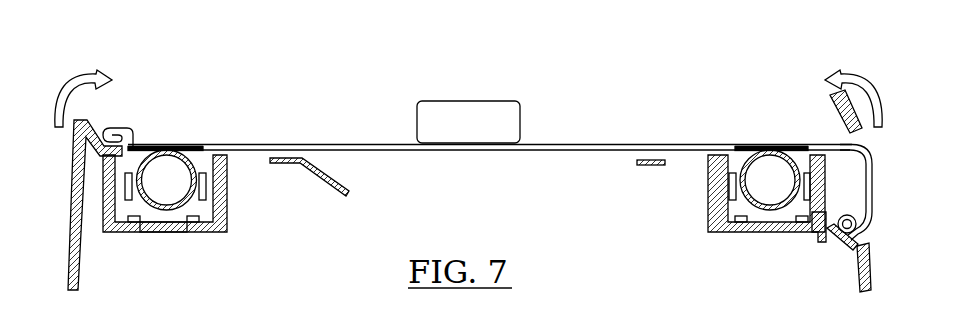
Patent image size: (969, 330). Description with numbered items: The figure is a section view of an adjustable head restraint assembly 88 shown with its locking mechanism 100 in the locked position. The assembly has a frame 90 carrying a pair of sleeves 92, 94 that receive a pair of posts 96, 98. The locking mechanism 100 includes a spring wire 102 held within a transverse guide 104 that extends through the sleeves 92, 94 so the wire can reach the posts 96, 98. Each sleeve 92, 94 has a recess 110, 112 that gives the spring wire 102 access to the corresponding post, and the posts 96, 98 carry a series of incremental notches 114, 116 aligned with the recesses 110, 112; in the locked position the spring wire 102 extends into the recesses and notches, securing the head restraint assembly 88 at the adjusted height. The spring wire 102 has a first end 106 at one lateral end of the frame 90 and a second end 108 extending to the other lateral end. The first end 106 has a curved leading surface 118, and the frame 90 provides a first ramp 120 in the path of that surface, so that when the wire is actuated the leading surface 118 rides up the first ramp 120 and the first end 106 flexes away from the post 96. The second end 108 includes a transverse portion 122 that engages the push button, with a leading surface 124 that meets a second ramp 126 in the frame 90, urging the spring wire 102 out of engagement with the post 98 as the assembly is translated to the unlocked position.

The head restraint assembly 88 is at (708, 125).
The frame 90 is at (228, 187).
The sleeve 92 is at (183, 218).
The sleeve 94 is at (738, 208).
The post 96 is at (163, 208).
The post 98 is at (763, 165).
The locking mechanism 100 is at (547, 116).
The spring wire 102 is at (545, 148).
The transverse guide 104 is at (215, 146).
The first end 106 is at (128, 160).
The second end 108 is at (828, 147).
The recess 110 is at (162, 147).
The recess 112 is at (752, 147).
The incremental notch 114 is at (172, 148).
The incremental notch 116 is at (770, 147).
The leading surface 118 is at (128, 132).
The first ramp 120 is at (80, 130).
The transverse portion 122 is at (853, 250).
The leading surface 124 is at (843, 250).
The second ramp 126 is at (820, 215).